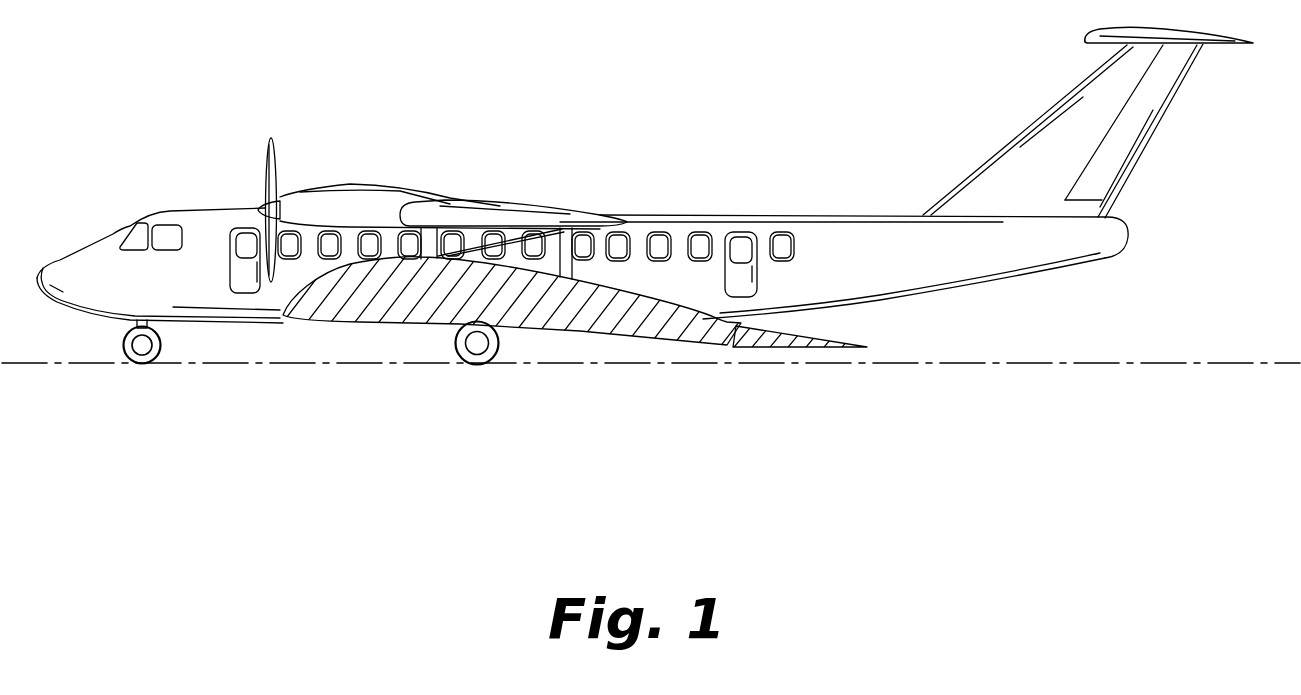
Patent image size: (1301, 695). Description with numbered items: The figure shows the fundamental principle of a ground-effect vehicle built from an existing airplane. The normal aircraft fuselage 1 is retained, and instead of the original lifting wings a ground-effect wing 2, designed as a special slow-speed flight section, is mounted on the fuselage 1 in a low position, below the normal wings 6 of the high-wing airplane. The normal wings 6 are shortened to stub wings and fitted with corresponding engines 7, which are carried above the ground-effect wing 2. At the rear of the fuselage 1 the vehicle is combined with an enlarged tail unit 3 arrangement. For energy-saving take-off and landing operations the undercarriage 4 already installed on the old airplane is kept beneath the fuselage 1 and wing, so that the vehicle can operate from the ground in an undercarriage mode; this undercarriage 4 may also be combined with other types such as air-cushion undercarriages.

The fuselage 1 is at (678, 242).
The ground-effect wing 2 is at (622, 327).
The tail unit 3 is at (1150, 163).
The undercarriage 4 is at (142, 345).
The normal wing 6 is at (489, 205).
The engine 7 is at (352, 200).